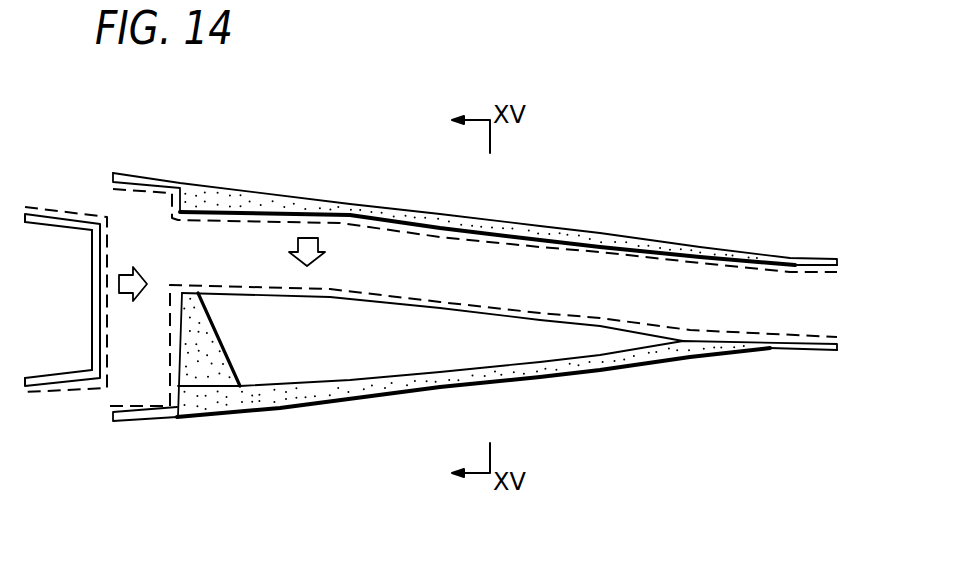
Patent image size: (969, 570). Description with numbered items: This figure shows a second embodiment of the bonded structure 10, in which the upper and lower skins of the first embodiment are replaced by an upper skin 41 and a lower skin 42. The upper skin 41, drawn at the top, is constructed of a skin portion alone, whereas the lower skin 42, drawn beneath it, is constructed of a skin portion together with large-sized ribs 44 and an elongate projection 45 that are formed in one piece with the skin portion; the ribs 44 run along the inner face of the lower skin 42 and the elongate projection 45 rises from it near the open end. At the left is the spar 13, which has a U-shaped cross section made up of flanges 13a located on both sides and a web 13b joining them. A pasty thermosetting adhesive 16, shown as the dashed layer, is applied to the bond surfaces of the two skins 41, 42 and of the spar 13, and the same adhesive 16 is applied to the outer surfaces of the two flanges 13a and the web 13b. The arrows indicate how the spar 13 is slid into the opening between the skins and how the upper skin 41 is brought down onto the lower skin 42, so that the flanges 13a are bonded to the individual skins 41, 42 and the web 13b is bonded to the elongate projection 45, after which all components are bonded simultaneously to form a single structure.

The ejector / structure assembly 10 is at (566, 174).
The spar 13 is at (64, 198).
The flanges 13a is at (50, 228).
The web 13b is at (92, 295).
The thermosetting adhesive 16 is at (109, 240).
The upper skin 41 is at (421, 213).
The lower skin 42 is at (407, 382).
The large-sized ribs 44 is at (500, 350).
The elongate projection 45 is at (215, 378).